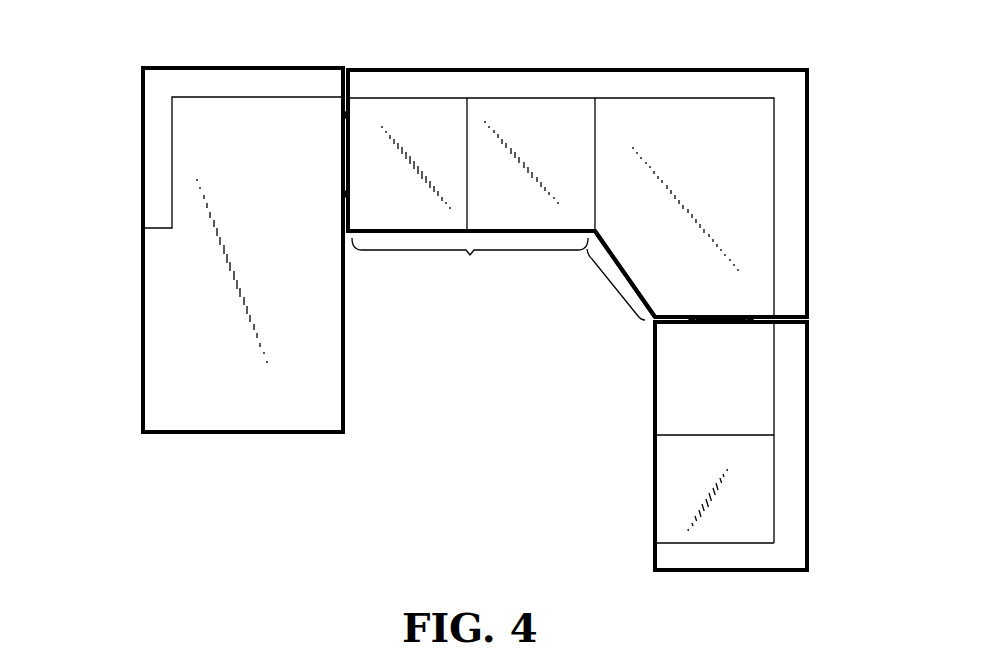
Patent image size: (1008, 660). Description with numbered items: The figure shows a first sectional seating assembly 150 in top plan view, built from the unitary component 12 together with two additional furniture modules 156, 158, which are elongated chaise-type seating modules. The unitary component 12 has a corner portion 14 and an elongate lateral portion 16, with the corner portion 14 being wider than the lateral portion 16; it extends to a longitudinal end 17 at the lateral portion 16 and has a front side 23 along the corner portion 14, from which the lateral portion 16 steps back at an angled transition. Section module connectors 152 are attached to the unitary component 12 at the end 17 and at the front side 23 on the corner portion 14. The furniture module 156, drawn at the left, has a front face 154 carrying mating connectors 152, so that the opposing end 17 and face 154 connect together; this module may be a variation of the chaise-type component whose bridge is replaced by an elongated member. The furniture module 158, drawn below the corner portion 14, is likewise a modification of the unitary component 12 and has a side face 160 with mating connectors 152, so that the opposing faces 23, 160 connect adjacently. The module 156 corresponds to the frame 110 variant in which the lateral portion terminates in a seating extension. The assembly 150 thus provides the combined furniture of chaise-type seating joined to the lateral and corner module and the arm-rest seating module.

The unitary component 12 is at (600, 70).
The corner portion 14 is at (613, 275).
The elongate lateral portion 16 is at (470, 264).
The longitudinal end 17 is at (348, 70).
The front side 23 is at (807, 317).
The frame 110 is at (143, 358).
The first sectional seating assembly 150 is at (510, 393).
The section module connectors 152 is at (345, 116).
The front face 154 is at (340, 150).
The furniture module 156 is at (327, 370).
The furniture module 158 is at (667, 378).
The side face 160 is at (728, 324).